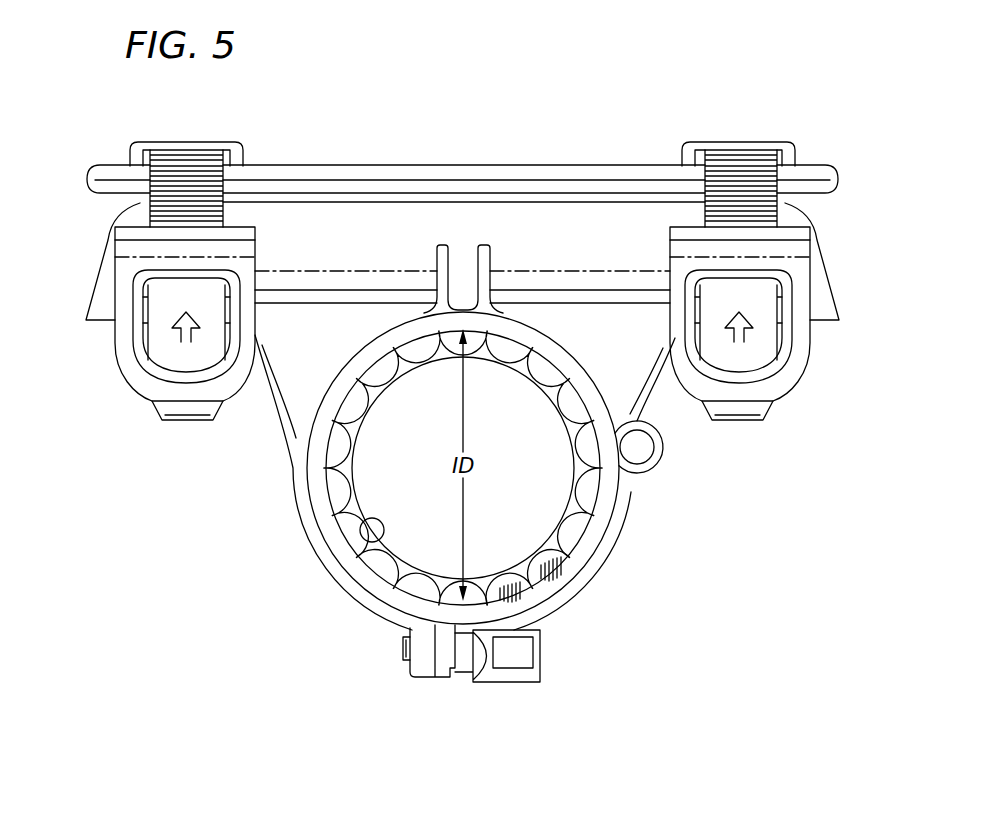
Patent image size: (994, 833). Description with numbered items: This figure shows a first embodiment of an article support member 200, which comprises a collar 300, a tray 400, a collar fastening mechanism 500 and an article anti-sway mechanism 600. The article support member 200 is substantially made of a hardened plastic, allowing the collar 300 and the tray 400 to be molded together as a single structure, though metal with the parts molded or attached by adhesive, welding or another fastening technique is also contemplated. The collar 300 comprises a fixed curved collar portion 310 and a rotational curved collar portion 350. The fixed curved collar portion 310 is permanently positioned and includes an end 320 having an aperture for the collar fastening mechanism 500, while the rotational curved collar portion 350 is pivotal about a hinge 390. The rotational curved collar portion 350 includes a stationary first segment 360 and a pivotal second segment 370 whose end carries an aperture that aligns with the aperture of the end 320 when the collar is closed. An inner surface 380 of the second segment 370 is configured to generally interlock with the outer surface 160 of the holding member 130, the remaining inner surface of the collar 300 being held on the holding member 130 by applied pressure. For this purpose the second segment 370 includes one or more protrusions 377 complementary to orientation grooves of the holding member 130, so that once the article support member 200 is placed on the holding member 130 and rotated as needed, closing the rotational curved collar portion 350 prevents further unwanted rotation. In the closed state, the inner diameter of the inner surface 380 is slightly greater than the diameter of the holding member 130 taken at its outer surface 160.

The holding member 130 is at (436, 348).
The outer surface 160 is at (372, 462).
The article support member 200 is at (232, 653).
The collar 300 is at (650, 488).
The fixed curved collar portion 310 is at (295, 463).
The end 320 is at (432, 678).
The rotational curved collar portion 350 is at (634, 547).
The stationary first segment 360 is at (584, 388).
The pivotal second segment 370 is at (590, 575).
The protrusions 377 is at (512, 592).
The inner surface 380 is at (366, 538).
The hinge 390 is at (664, 434).
The tray 400 is at (822, 278).
The collar fastening mechanism 500 is at (515, 700).
The article anti-sway mechanism 600 is at (828, 150).